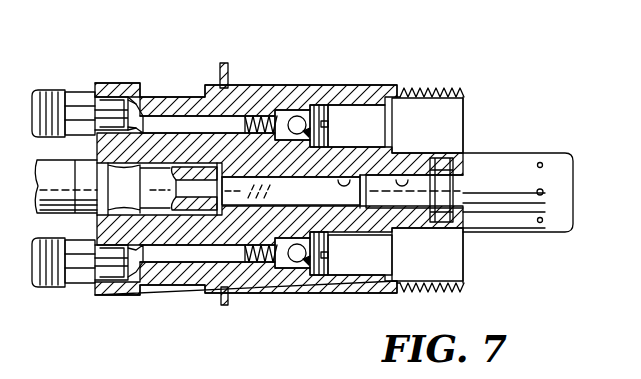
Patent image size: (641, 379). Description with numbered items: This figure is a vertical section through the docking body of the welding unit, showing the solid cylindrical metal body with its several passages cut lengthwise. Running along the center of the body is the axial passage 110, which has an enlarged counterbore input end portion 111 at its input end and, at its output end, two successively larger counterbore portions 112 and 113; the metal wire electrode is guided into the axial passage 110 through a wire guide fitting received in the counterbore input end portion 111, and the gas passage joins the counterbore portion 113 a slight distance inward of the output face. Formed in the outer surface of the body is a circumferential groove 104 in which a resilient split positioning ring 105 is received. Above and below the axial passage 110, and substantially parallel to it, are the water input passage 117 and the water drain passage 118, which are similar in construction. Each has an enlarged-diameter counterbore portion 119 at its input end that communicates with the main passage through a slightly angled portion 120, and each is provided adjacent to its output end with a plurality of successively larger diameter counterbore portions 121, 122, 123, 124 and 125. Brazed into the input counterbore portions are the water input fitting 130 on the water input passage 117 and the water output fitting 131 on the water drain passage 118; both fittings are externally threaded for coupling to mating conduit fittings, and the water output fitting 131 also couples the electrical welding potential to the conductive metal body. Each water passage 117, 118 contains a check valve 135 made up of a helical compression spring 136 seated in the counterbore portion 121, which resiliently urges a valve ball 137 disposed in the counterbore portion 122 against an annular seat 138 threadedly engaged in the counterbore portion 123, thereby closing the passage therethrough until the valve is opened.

The circumferential groove 104 is at (235, 84).
The resilient split positioning ring 105 is at (225, 63).
The axial passage 110 is at (352, 176).
The counterbore input end portion 111 is at (228, 195).
The counterbore portion 112 is at (410, 178).
The counterbore portion 113 is at (465, 158).
The water input passage 117 is at (170, 120).
The water drain passage 118 is at (180, 270).
The enlarged-diameter counterbore portion 119 is at (92, 108).
The slightly angled portion 120 is at (135, 118).
The counterbore portion 121 is at (250, 263).
The counterbore portion 122 is at (277, 266).
The counterbore portion 123 is at (310, 268).
The counterbore portion 124 is at (367, 268).
The counterbore portion 125 is at (455, 283).
The water input fitting 130 is at (63, 68).
The water output fitting 131 is at (50, 287).
The check valve 135 is at (340, 116).
The helical compression spring 136 is at (297, 118).
The valve ball 137 is at (313, 108).
The annular seat 138 is at (335, 118).